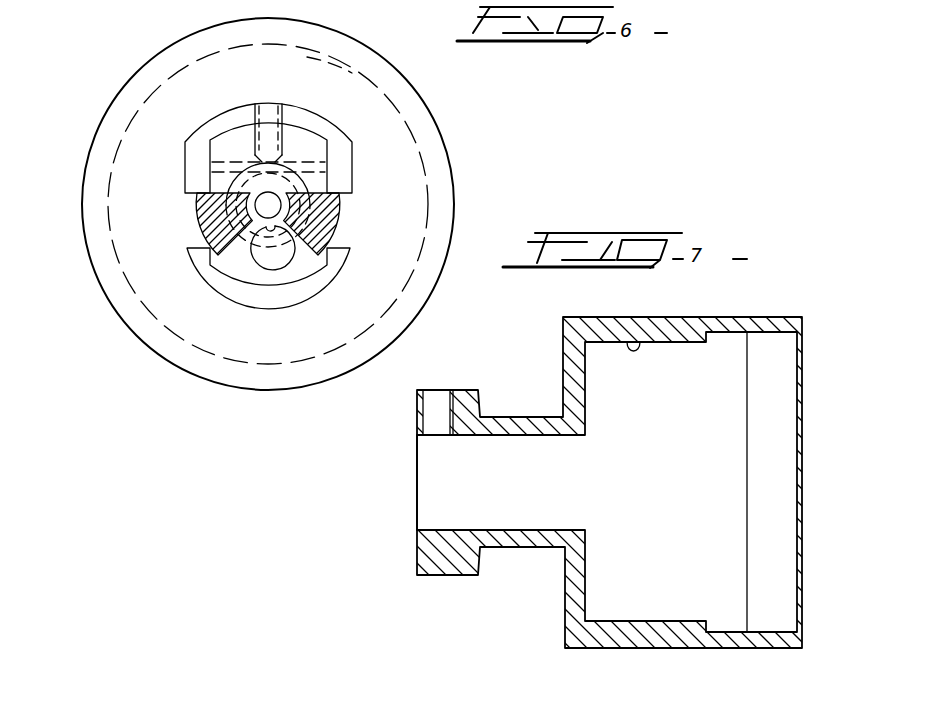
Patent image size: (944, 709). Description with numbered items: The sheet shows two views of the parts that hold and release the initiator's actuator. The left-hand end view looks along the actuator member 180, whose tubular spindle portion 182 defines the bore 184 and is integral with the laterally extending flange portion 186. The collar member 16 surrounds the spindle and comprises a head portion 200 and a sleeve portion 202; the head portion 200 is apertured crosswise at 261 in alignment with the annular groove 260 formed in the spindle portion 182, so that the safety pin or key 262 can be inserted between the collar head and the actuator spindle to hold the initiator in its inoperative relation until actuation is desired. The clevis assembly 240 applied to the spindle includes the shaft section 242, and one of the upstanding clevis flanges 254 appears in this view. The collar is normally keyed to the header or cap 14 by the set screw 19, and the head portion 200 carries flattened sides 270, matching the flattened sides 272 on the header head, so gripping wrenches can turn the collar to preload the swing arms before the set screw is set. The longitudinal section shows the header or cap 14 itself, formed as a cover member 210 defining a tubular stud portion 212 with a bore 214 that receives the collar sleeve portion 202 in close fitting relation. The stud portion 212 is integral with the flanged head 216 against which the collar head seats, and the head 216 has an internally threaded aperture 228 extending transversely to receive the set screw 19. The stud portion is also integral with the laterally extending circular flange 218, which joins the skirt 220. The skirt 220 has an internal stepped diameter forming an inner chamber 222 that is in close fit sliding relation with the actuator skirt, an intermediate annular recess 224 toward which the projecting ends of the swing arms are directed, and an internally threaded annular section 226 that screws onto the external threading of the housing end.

In FIG. 6, the header or cap 14 is at (303, 398).
In FIG. 7, the header or cap 14 is at (509, 349).
In FIG. 6, the collar member 16 is at (322, 136).
In FIG. 6, the set screw 19 is at (266, 96).
In FIG. 6, the actuator member 180 is at (158, 88).
In FIG. 6, the spindle portion 182 is at (300, 240).
In FIG. 6, the bore 184 is at (283, 240).
In FIG. 6, the flange portion 186 is at (330, 70).
In FIG. 6, the head portion 200 is at (232, 130).
In FIG. 6, the sleeve portion 202 is at (218, 222).
In FIG. 7, the cover member 210 is at (556, 628).
In FIG. 6, the tubular stud portion 212 is at (310, 225).
In FIG. 7, the tubular stud portion 212 is at (530, 422).
In FIG. 7, the bore 214 is at (526, 522).
In FIG. 6, the flanged head 216 is at (308, 120).
In FIG. 7, the flanged head 216 is at (463, 385).
In FIG. 7, the circular flange 218 is at (563, 357).
In FIG. 6, the skirt 220 is at (420, 85).
In FIG. 7, the skirt 220 is at (648, 648).
In FIG. 7, the inner chamber 222 is at (634, 348).
In FIG. 7, the intermediate annular recess 224 is at (728, 345).
In FIG. 7, the internally threaded annular section 226 is at (778, 377).
In FIG. 7, the internally threaded aperture 228 is at (427, 417).
In FIG. 6, the clevis assembly 240 is at (240, 206).
In FIG. 6, the shaft section 242 is at (300, 206).
In FIG. 6, the flange 254 is at (85, 10).
In FIG. 6, the annular groove 260 is at (250, 258).
In FIG. 6, the crosswise aperture 261 is at (195, 130).
In FIG. 6, the safety pin or key 262 is at (185, 173).
In FIG. 6, the flattened sides 270 is at (330, 152).
In FIG. 6, the flattened sides 272 is at (208, 158).